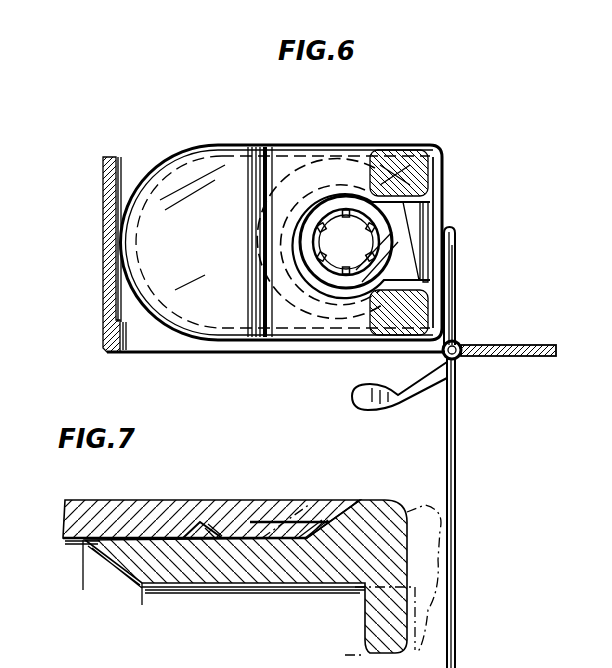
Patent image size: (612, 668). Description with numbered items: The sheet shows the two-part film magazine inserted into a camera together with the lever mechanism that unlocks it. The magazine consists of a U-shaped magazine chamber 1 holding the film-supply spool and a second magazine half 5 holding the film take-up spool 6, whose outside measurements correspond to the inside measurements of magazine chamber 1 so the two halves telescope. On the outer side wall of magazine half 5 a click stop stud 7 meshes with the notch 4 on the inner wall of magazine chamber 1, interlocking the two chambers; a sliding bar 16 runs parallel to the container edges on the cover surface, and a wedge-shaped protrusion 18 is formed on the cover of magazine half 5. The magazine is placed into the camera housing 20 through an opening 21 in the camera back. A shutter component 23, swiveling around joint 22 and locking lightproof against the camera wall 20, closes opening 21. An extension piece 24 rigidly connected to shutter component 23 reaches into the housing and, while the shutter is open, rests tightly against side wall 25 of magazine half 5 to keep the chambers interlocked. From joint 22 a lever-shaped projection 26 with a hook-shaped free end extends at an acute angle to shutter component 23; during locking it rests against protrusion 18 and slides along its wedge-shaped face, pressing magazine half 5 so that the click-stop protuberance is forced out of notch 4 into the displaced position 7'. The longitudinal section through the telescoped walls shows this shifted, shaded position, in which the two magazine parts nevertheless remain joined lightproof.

In FIG. 6, the magazine chamber 1 is at (190, 160).
In FIG. 7, the magazine chamber 1 is at (103, 500).
In FIG. 7, the notch 4 is at (214, 540).
In FIG. 6, the second magazine half 5 is at (441, 152).
In FIG. 7, the second magazine half 5 is at (386, 528).
In FIG. 6, the film take-up spool 6 is at (336, 198).
In FIG. 7, the click stop stud 7 is at (199, 498).
In FIG. 7, the click stop stud 7' is at (290, 498).
In FIG. 6, the sliding bar 16 is at (438, 258).
In FIG. 6, the wedge-shaped protrusion 18 is at (433, 206).
In FIG. 6, the camera housing 20 is at (104, 180).
In FIG. 6, the opening 21 is at (142, 347).
In FIG. 6, the joint 22 is at (458, 343).
In FIG. 6, the shutter component 23 is at (456, 654).
In FIG. 6, the extension piece 24 is at (451, 293).
In FIG. 6, the side wall 25 is at (441, 218).
In FIG. 6, the lever-shaped projection 26 is at (397, 402).